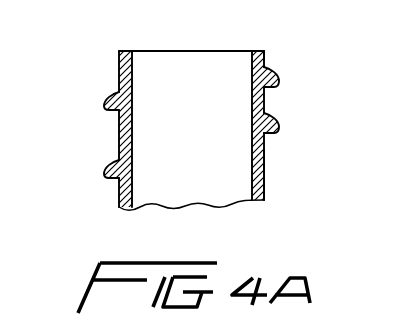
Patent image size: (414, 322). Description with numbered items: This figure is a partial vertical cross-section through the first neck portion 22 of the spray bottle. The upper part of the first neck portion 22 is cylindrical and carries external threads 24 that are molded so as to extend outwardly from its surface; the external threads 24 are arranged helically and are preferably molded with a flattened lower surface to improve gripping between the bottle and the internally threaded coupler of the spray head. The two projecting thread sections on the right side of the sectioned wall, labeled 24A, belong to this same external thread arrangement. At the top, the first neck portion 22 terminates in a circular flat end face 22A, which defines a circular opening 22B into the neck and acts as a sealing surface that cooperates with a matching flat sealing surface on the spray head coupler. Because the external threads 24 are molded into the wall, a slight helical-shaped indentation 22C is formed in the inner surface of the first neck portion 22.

The first neck portion 22 is at (112, 62).
The circular flat end face 22A is at (118, 50).
The circular opening 22B is at (258, 50).
The helical-shaped indentation 22C is at (266, 160).
The external threads 24 is at (108, 168).
The outwardly projecting flanges on opposite side 24A is at (279, 125).